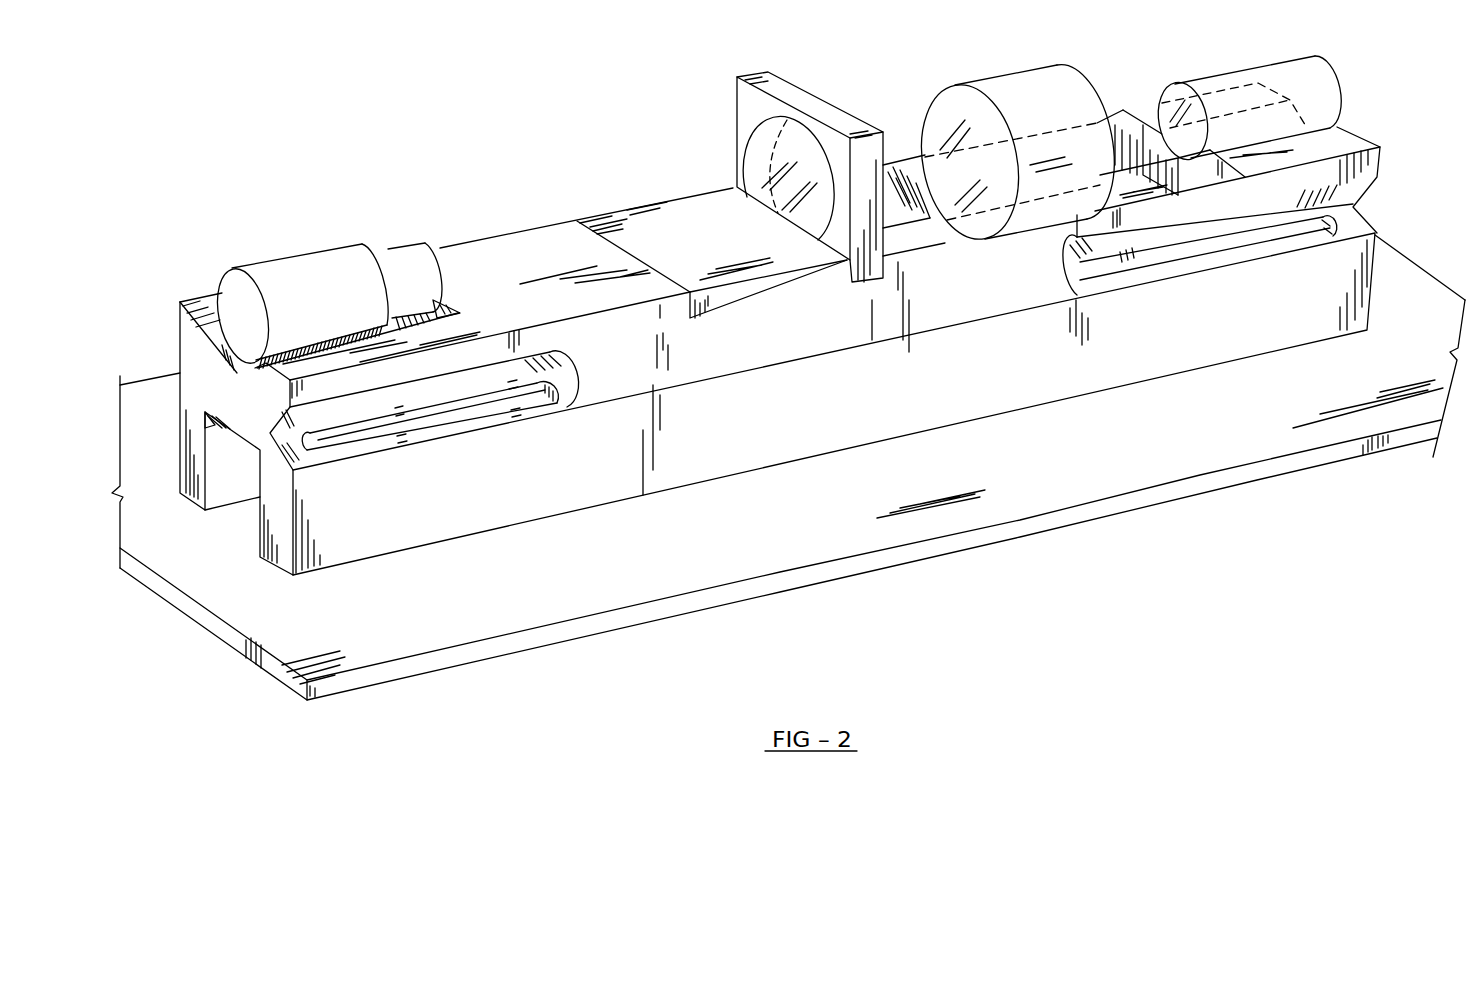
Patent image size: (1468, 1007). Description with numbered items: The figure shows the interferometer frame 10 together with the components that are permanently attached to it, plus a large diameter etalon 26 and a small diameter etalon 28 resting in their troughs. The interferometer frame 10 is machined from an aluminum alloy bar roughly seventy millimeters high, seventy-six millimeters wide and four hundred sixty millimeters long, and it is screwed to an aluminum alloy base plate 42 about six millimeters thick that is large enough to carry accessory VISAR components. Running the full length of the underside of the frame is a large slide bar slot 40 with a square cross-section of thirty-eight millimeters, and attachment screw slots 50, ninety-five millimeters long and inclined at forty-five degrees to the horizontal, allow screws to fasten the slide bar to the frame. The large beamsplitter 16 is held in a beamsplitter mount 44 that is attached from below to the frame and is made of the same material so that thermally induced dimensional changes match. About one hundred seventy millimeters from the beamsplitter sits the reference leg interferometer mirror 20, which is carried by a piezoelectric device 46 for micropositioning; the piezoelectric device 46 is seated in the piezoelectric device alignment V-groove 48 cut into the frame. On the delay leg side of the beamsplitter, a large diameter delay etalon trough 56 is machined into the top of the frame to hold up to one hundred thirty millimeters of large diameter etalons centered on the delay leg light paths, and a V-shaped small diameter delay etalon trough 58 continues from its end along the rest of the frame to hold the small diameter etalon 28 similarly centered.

The interferometer frame 10 is at (988, 380).
The large beamsplitter 16 is at (762, 165).
The reference leg interferometer mirror 20 is at (432, 258).
The large diameter etalon 26 is at (1033, 68).
The small diameter etalon 28 is at (1257, 65).
The slide bar slot 40 is at (233, 470).
The base plate 42 is at (1187, 452).
The beamsplitter mount 44 is at (663, 210).
The piezoelectric device 46 is at (312, 262).
The piezoelectric device alignment V-groove 48 is at (228, 358).
The attachment screw slots 50 is at (465, 412).
The large diameter delay etalon trough 56 is at (910, 177).
The small diameter delay etalon trough 58 is at (1185, 128).